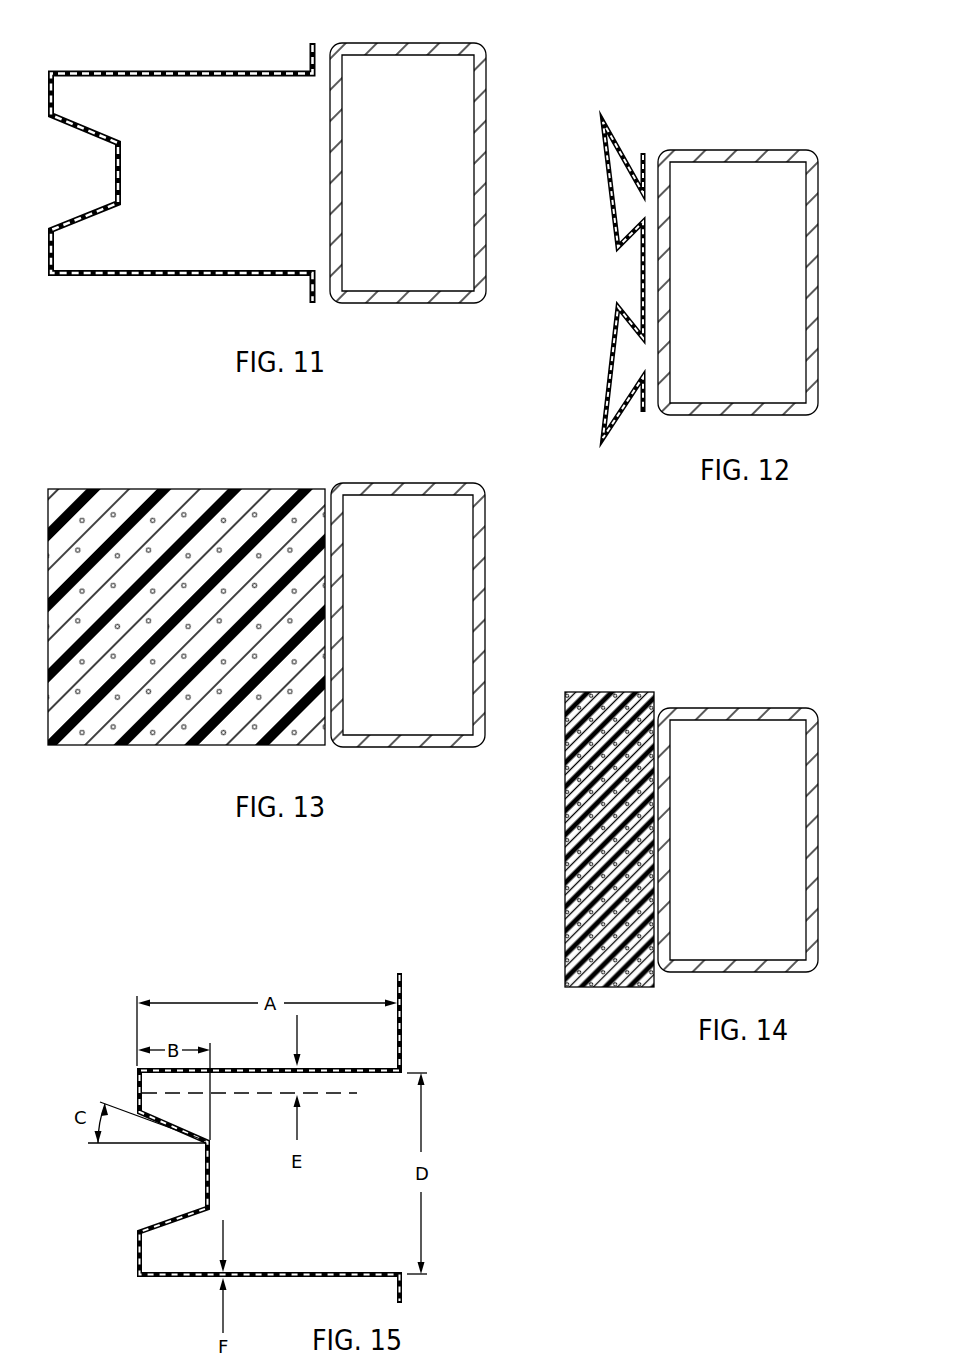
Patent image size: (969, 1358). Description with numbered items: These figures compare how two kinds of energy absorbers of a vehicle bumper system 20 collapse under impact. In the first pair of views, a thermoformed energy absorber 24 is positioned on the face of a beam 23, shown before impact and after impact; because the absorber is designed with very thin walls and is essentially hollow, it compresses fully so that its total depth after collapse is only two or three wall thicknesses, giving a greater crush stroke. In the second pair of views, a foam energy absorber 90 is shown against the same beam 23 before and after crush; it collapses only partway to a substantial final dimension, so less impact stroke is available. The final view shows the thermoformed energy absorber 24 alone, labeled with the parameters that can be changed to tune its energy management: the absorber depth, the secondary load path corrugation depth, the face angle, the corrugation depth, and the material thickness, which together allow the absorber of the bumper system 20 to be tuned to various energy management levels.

In FIG. 11, the vehicle bumper system 20 is at (313, 153).
In FIG. 12, the vehicle bumper system 20 is at (736, 254).
In FIG. 11, the beam 23 is at (386, 43).
In FIG. 12, the beam 23 is at (718, 150).
In FIG. 13, the beam 23 is at (386, 483).
In FIG. 14, the beam 23 is at (718, 708).
In FIG. 11, the thermoformed energy absorber 24 is at (149, 70).
In FIG. 12, the thermoformed energy absorber 24 is at (619, 138).
In FIG. 13, the foam energy absorber 90 is at (194, 489).
In FIG. 14, the foam energy absorber 90 is at (611, 692).